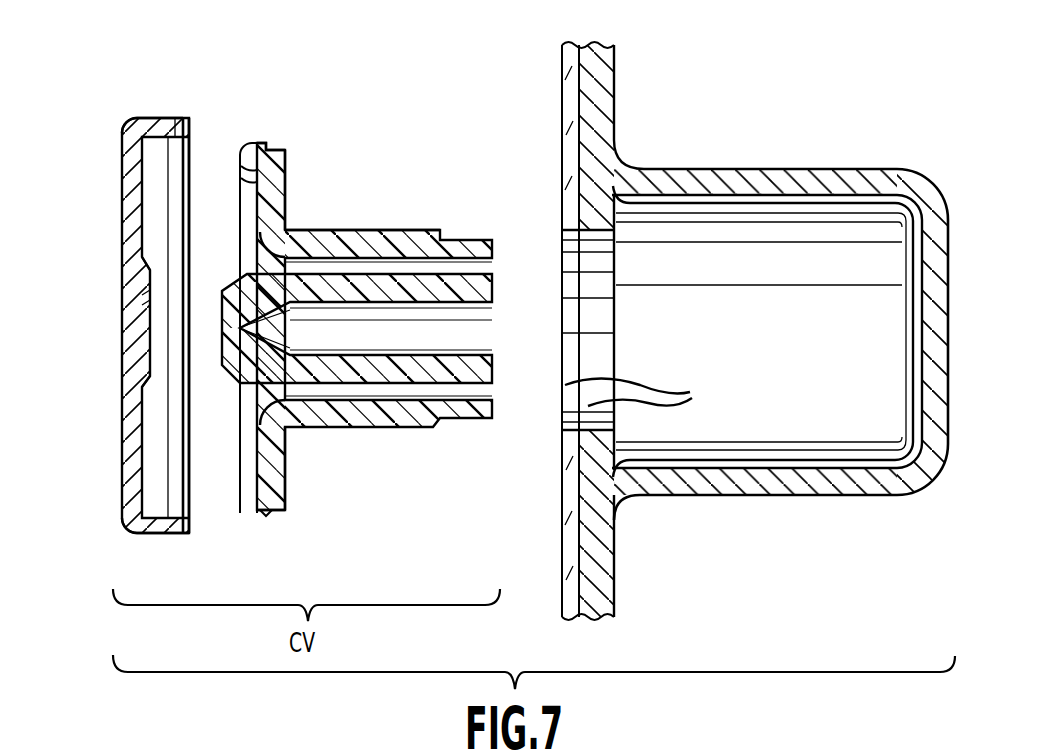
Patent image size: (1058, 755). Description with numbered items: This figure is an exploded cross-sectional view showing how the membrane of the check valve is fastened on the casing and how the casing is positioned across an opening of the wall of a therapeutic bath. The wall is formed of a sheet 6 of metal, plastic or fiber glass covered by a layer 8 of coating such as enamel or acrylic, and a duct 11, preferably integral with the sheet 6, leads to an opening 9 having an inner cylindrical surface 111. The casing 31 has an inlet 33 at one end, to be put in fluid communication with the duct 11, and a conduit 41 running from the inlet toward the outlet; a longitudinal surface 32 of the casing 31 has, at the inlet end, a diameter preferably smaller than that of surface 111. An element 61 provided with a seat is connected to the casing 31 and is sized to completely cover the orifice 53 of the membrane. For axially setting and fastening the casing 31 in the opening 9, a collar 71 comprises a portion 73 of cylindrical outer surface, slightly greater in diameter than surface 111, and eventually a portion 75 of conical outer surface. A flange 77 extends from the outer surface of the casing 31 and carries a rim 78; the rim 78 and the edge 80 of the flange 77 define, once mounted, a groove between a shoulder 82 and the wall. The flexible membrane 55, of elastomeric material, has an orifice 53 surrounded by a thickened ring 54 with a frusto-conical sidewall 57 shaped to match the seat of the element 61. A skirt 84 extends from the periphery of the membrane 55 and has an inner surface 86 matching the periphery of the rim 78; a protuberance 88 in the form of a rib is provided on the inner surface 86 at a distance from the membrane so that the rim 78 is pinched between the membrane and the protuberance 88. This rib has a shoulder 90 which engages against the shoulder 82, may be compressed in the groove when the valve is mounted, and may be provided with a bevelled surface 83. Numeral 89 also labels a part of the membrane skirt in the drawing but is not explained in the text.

The sheet 6 is at (602, 45).
The layer of coating 8 is at (564, 45).
The opening 9 is at (618, 315).
The duct 11 is at (760, 169).
The casing 31 is at (381, 324).
The longitudinal surface 32 is at (480, 240).
The inlet 33 is at (492, 394).
The conduit 41 is at (474, 255).
The orifice 53 is at (137, 352).
The ring 54 is at (142, 257).
The flexible membrane 55 is at (124, 113).
The frusto-conical sidewall 57 is at (145, 298).
The element 61 is at (474, 292).
The collar 71 is at (442, 432).
The portion of cylindrical outer surface 73 is at (396, 232).
The portion of conical outer surface 75 is at (438, 232).
The flange 77 is at (285, 190).
The rim 78 is at (248, 142).
The edge of the flange 80 is at (272, 150).
The shoulder 82 is at (266, 514).
The bevelled surface 83 is at (178, 525).
The skirt 84 is at (165, 118).
The inner surface 86 is at (158, 530).
The protuberance 88 is at (176, 140).
The corner 89 is at (185, 122).
The shoulder 90 is at (140, 140).
The inner cylindrical surface 111 is at (650, 388).